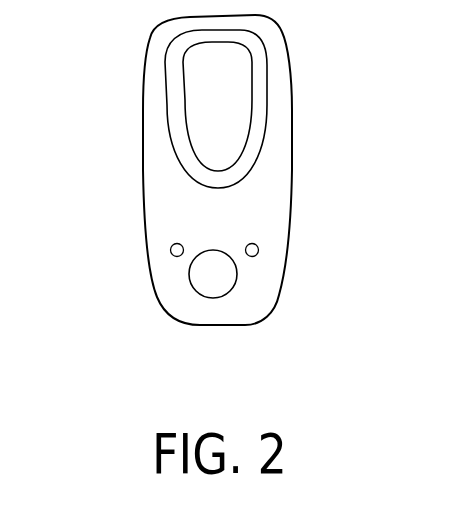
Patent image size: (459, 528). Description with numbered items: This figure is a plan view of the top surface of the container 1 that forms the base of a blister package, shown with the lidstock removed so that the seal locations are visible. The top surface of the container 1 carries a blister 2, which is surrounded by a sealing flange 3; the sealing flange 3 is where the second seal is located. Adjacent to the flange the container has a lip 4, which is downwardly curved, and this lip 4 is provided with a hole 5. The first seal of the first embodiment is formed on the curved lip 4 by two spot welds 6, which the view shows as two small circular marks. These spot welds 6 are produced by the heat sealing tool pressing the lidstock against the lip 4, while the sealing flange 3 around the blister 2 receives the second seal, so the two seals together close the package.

The container 1 is at (160, 160).
The blister 2 is at (237, 118).
The sealing flange 3 is at (257, 62).
The lip 4 is at (257, 300).
The hole 5 is at (205, 278).
The spot welds 6 is at (170, 251).